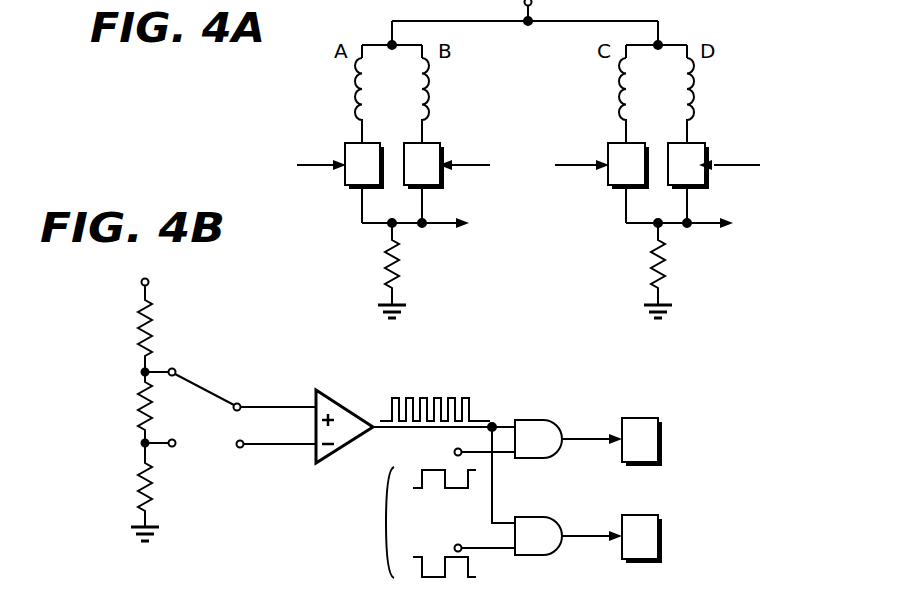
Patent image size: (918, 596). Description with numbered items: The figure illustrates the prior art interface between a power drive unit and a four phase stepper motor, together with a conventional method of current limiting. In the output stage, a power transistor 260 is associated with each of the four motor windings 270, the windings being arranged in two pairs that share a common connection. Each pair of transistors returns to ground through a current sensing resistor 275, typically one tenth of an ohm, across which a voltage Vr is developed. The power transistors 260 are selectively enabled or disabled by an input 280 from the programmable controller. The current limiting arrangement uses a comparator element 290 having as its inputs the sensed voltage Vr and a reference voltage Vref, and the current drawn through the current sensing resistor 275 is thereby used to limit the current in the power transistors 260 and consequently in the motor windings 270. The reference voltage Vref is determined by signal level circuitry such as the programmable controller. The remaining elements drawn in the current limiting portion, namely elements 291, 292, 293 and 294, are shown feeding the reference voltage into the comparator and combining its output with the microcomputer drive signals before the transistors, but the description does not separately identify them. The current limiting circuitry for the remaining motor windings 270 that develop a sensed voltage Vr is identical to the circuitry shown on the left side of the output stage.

In FIG. 4A, the power transistor 260 is at (522, 163).
In FIG. 4B, the power transistor 260 is at (639, 468).
In FIG. 4A, the motor winding 270 is at (523, 100).
In FIG. 4A, the current sensing resistor 275 is at (549, 251).
In FIG. 4A, the input 280 is at (527, 154).
In FIG. 4B, the input 280 is at (592, 467).
In FIG. 4B, the comparator element 290 is at (365, 408).
In FIG. 4B, the voltage divider network (R1, R2, R3) 291 is at (121, 406).
In FIG. 4B, the AND gates 292 is at (509, 468).
In FIG. 4B, the reference voltage tap / wiper 293 is at (212, 382).
In FIG. 4B, the microcomputer drive signals 294 is at (346, 522).